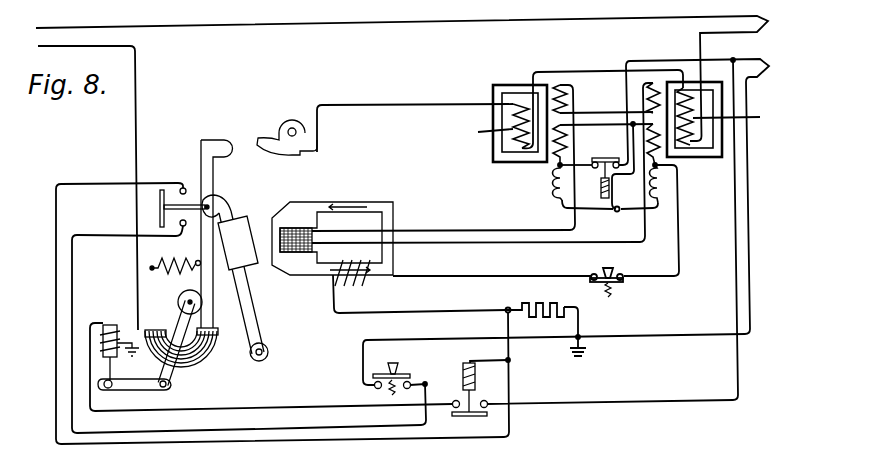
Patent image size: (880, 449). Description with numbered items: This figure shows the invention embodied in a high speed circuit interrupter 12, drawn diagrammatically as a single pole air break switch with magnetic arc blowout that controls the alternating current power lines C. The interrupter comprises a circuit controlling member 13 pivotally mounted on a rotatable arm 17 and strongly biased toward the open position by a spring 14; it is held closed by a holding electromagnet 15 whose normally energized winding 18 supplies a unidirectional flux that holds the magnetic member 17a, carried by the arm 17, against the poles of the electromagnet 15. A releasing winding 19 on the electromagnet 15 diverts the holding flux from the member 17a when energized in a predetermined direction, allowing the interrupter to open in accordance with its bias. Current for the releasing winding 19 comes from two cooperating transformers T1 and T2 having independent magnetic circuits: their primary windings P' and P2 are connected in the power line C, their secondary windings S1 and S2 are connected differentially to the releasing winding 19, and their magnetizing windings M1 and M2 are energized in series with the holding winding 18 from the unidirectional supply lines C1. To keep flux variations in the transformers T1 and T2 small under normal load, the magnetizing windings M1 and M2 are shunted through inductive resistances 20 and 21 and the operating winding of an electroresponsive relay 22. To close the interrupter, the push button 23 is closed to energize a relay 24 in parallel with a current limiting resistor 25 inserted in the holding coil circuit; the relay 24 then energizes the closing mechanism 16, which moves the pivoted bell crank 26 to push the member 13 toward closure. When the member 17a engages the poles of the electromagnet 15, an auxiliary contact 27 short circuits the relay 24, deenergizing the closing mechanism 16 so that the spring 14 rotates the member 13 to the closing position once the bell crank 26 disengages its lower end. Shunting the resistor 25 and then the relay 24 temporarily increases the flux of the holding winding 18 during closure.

The interrupter 12 is at (277, 134).
The circuit controlling member 13 is at (213, 178).
The biasing spring 14 is at (190, 262).
The holding electromagnet 15 is at (348, 202).
The closing mechanism 16 is at (110, 325).
The rotatable arm 17 is at (231, 204).
The magnetic member 17a is at (254, 265).
The holding winding 18 is at (352, 278).
The releasing winding 19 is at (312, 240).
The inductive resistance 20 is at (557, 196).
The inductive resistance 21 is at (665, 183).
The electroresponsive relay 22 is at (603, 180).
The push button 23 is at (400, 366).
The relay 24 is at (476, 389).
The current limiting resistor 25 is at (537, 306).
The bell crank 26 is at (178, 308).
The auxiliary contact 27 is at (160, 209).
The transformer T1 is at (708, 84).
The transformer T2 is at (500, 87).
The secondary winding S1 is at (647, 95).
The secondary winding S2 is at (573, 98).
The magnetizing winding M1 is at (647, 138).
The magnetizing winding M2 is at (570, 139).
The primary winding P2 is at (464, 131).
The primary winding P' is at (768, 122).
The power lines C is at (777, 21).
The unidirectional supply lines C1 is at (779, 69).